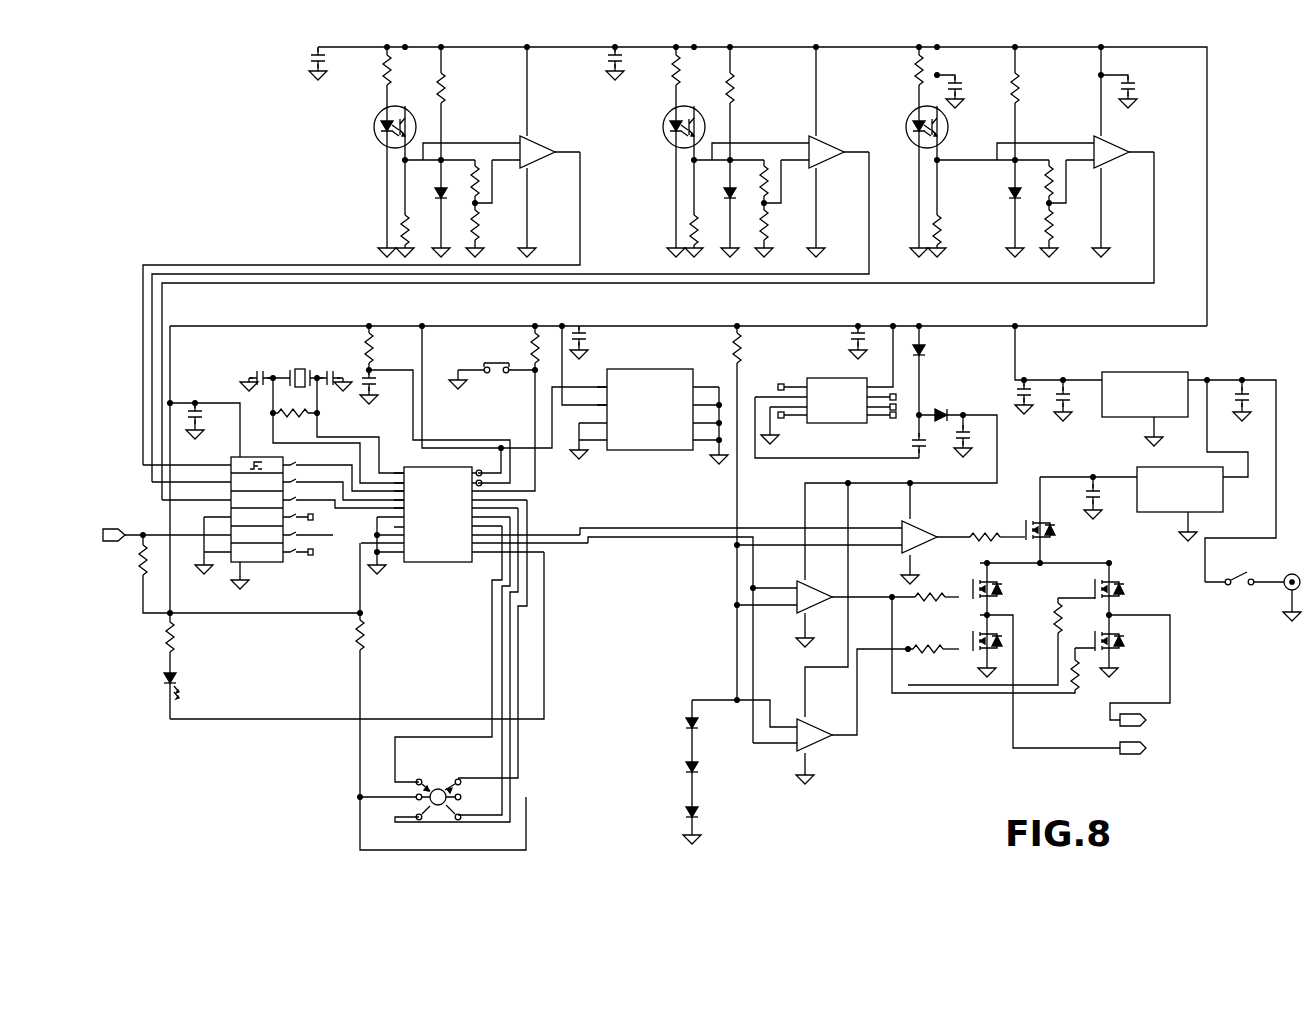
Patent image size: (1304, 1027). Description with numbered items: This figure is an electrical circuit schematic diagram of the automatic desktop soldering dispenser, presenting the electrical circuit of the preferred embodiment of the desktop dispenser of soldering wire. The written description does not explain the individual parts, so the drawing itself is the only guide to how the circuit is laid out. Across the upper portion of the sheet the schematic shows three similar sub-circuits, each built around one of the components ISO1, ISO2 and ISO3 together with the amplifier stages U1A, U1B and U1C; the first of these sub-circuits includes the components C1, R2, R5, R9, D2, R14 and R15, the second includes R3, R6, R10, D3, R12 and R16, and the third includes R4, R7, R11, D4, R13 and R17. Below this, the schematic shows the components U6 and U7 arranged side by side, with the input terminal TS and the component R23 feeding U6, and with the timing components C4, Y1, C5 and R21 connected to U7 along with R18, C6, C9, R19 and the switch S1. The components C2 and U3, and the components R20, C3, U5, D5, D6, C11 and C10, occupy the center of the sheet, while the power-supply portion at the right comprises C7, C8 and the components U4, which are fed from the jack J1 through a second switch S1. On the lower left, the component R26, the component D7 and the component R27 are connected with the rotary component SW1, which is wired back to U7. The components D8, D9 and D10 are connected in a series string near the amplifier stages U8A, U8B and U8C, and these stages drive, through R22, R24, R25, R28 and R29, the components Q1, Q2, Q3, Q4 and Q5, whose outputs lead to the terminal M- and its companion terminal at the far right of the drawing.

The capacitor C1 is at (728, 76).
The resistor R2 is at (370, 76).
The resistor R3 is at (660, 76).
The resistor R4 is at (901, 76).
The resistor R5 is at (458, 103).
The resistor R6 is at (747, 103).
The resistor R7 is at (1032, 103).
The optocoupler ISO1 is at (368, 127).
The optocoupler ISO2 is at (657, 127).
The optocoupler ISO3 is at (901, 127).
The operational amplifier U1A is at (531, 152).
The operational amplifier U1B is at (820, 152).
The operational amplifier U1C is at (1105, 152).
The resistor R9 is at (472, 174).
The resistor R10 is at (765, 174).
The resistor R11 is at (1048, 174).
The diode D2 is at (432, 208).
The diode D3 is at (720, 208).
The diode D4 is at (1000, 208).
The resistor R14 is at (381, 202).
The resistor R12 is at (670, 202).
The resistor R13 is at (948, 202).
The resistor R15 is at (496, 230).
The resistor R16 is at (785, 230).
The resistor R17 is at (1070, 230).
The capacitor C9 is at (204, 416).
The capacitor C4 is at (256, 367).
The crystal Y1 is at (295, 365).
The capacitor C5 is at (334, 367).
The resistor R21 is at (295, 406).
The resistor R18 is at (437, 404).
The capacitor C6 is at (382, 387).
The resistor R19 is at (517, 396).
The switch S1 is at (866, 463).
The capacitor C2 is at (577, 330).
The reset IC U3 is at (649, 402).
The resistor R20 is at (740, 502).
The capacitor C3 is at (857, 330).
The charge pump IC U5 is at (837, 392).
The diode D5 is at (939, 370).
The diode D6 is at (941, 399).
The capacitor C11 is at (899, 435).
The capacitor C10 is at (968, 447).
The capacitor C7 is at (1043, 370).
The capacitor C8 is at (1148, 438).
The voltage regulator U4 is at (1158, 461).
The power jack J1 is at (1290, 586).
The hex inverter U6 is at (264, 523).
The microcontroller U7 is at (474, 527).
The input terminal TS is at (105, 523).
The resistor R23 is at (241, 574).
The resistor R26 is at (147, 640).
The LED D7 is at (195, 688).
The resistor R27 is at (441, 696).
The rotary switch SW1 is at (410, 789).
The diode D8 is at (669, 722).
The diode D9 is at (669, 767).
The diode D10 is at (665, 817).
The operational amplifier U8A is at (915, 542).
The operational amplifier U8B is at (826, 602).
The operational amplifier U8C is at (833, 715).
The resistor R22 is at (997, 525).
The resistor R24 is at (937, 587).
The resistor R25 is at (1001, 641).
The resistor R28 is at (936, 637).
The resistor R29 is at (1007, 649).
The MOSFET Q1 is at (1057, 521).
The MOSFET Q2 is at (1003, 589).
The MOSFET Q3 is at (1125, 589).
The MOSFET Q4 is at (974, 646).
The MOSFET Q5 is at (1125, 646).
The motor negative terminal M- is at (1157, 748).